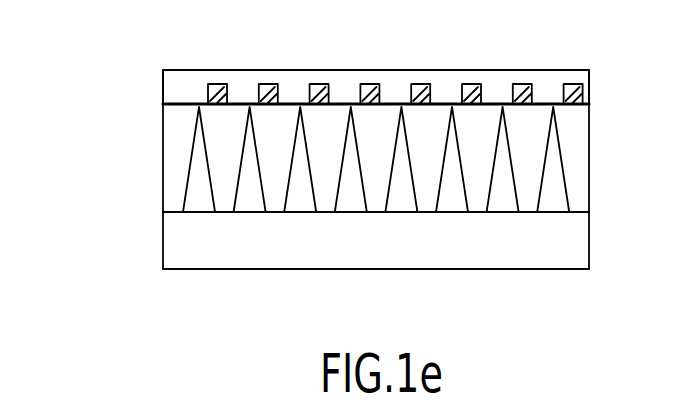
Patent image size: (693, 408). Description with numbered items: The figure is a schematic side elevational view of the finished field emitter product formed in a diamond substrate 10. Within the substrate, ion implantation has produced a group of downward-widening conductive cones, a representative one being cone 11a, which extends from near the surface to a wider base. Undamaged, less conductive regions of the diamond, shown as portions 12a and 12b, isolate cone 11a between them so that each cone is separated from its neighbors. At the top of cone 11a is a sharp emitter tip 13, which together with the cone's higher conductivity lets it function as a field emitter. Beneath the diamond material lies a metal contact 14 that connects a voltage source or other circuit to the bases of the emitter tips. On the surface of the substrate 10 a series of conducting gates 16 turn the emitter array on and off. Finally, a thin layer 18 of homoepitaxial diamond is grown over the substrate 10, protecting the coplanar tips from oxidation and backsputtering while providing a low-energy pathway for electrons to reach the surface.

The diamond substrate 10 is at (328, 175).
The cone 11a is at (553, 138).
The undamaged portion 12a is at (532, 175).
The undamaged portion 12b is at (573, 197).
The emitter tip 13 is at (553, 104).
The contact 14 is at (563, 248).
The gates 16 is at (573, 82).
The layer of homoepitaxial diamond 18 is at (175, 90).